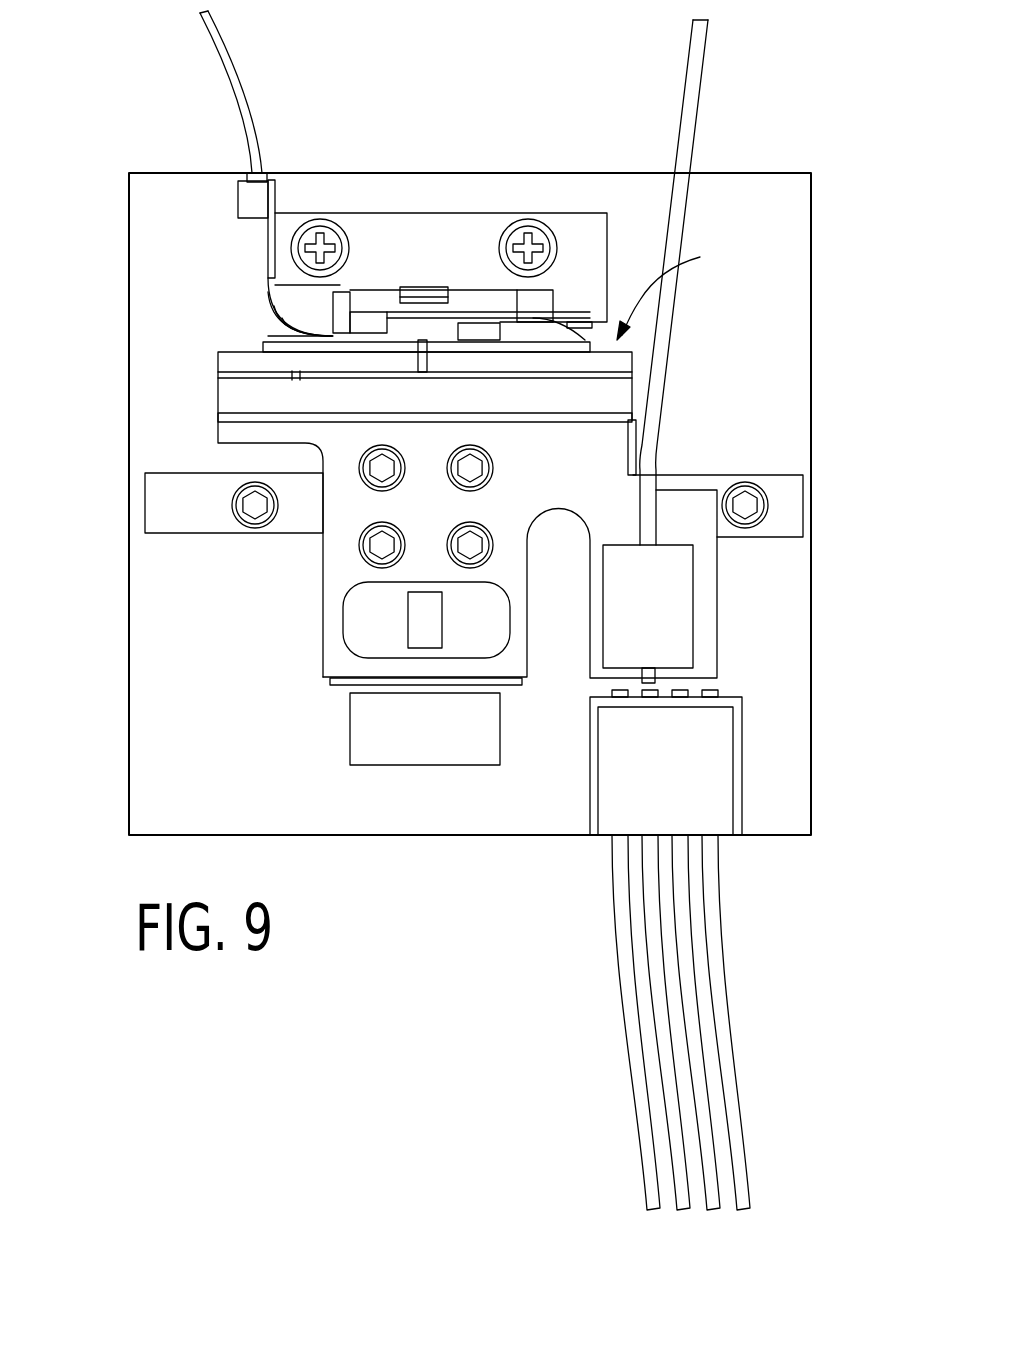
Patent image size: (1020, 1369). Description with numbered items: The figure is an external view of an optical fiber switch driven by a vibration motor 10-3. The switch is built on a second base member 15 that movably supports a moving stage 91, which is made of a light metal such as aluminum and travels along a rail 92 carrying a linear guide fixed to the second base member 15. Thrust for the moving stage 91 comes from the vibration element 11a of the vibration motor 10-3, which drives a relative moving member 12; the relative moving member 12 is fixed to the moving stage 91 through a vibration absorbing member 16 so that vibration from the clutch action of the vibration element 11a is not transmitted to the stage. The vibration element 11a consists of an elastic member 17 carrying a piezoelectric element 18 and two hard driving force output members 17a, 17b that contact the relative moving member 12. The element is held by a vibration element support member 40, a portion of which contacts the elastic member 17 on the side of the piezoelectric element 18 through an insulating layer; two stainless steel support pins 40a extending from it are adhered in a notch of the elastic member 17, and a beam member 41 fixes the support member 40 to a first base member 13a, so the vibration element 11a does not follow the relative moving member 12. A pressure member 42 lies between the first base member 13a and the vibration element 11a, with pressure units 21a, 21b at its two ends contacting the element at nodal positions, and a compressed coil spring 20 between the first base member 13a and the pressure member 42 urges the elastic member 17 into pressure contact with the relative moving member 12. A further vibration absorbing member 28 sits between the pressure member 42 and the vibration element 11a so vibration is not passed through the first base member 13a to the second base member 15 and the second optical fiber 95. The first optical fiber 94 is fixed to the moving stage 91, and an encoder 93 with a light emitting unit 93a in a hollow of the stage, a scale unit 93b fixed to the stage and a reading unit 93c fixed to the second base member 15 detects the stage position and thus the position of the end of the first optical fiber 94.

The second base member 15 is at (772, 195).
The first base member 13a is at (347, 217).
The vibration motor 10-3 is at (565, 213).
The pressure unit 21a is at (338, 323).
The pressure unit 21b is at (513, 320).
The compressed coil spring 20 is at (425, 287).
The pressure member 42 is at (268, 276).
The vibration absorbing member 28 is at (268, 325).
The beam member 41 is at (505, 322).
The vibration element support member 40 is at (425, 333).
The piezoelectric element 18 is at (265, 345).
The vibration element 11a is at (687, 285).
The elastic member 17 is at (218, 355).
The driving force output member 17a is at (300, 375).
The driving force output member 17b is at (547, 378).
The relative moving member 12 is at (618, 400).
The first optical fiber 94 is at (692, 98).
The vibration absorbing member 16 is at (617, 350).
The moving stage 91 is at (333, 562).
The support pins 40a is at (420, 363).
The rail 92 is at (793, 520).
The encoder 93 is at (210, 668).
The light emitting unit 93a is at (407, 623).
The scale unit 93b is at (333, 684).
The reading unit 93c is at (360, 740).
The second optical fiber 95 is at (763, 1222).